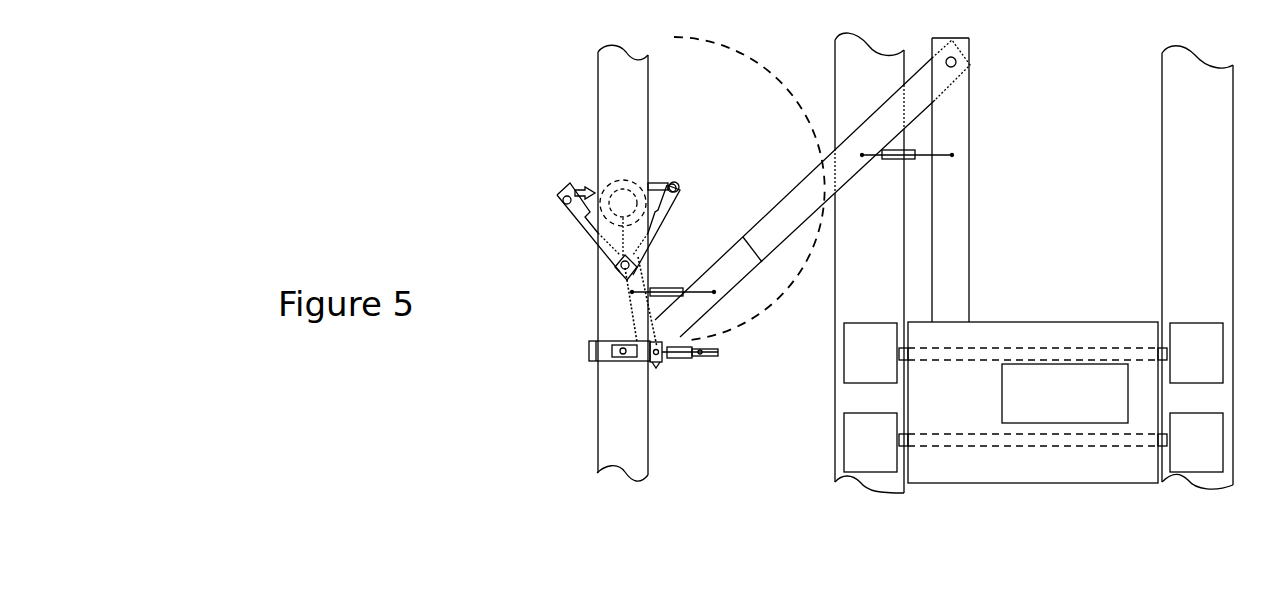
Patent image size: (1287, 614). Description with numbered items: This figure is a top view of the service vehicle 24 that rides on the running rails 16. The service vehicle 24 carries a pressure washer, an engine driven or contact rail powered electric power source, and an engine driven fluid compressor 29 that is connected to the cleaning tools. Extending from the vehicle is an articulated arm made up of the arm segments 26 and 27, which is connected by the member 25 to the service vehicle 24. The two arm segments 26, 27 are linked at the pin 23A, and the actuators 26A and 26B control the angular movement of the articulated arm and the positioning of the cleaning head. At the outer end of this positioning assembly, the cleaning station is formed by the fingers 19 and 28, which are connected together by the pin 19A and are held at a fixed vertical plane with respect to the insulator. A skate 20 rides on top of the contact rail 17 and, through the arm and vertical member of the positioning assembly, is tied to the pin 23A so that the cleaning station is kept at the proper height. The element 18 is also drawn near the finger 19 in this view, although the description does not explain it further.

The running rails 16 is at (892, 39).
The contact rail 17 is at (605, 126).
The pin 18 is at (585, 178).
The finger 19 is at (570, 235).
The pin 19A is at (606, 269).
The skate 20 is at (592, 358).
The pin 23A is at (671, 368).
The service vehicle 24 is at (989, 312).
The member 25 is at (984, 214).
The articulated arm segment 26 is at (793, 194).
The actuator 26A is at (920, 142).
The actuator 26B is at (673, 270).
The articulated arm segment 27 is at (611, 308).
The finger 28 is at (681, 167).
The engine driven fluid compressor 29 is at (1080, 350).